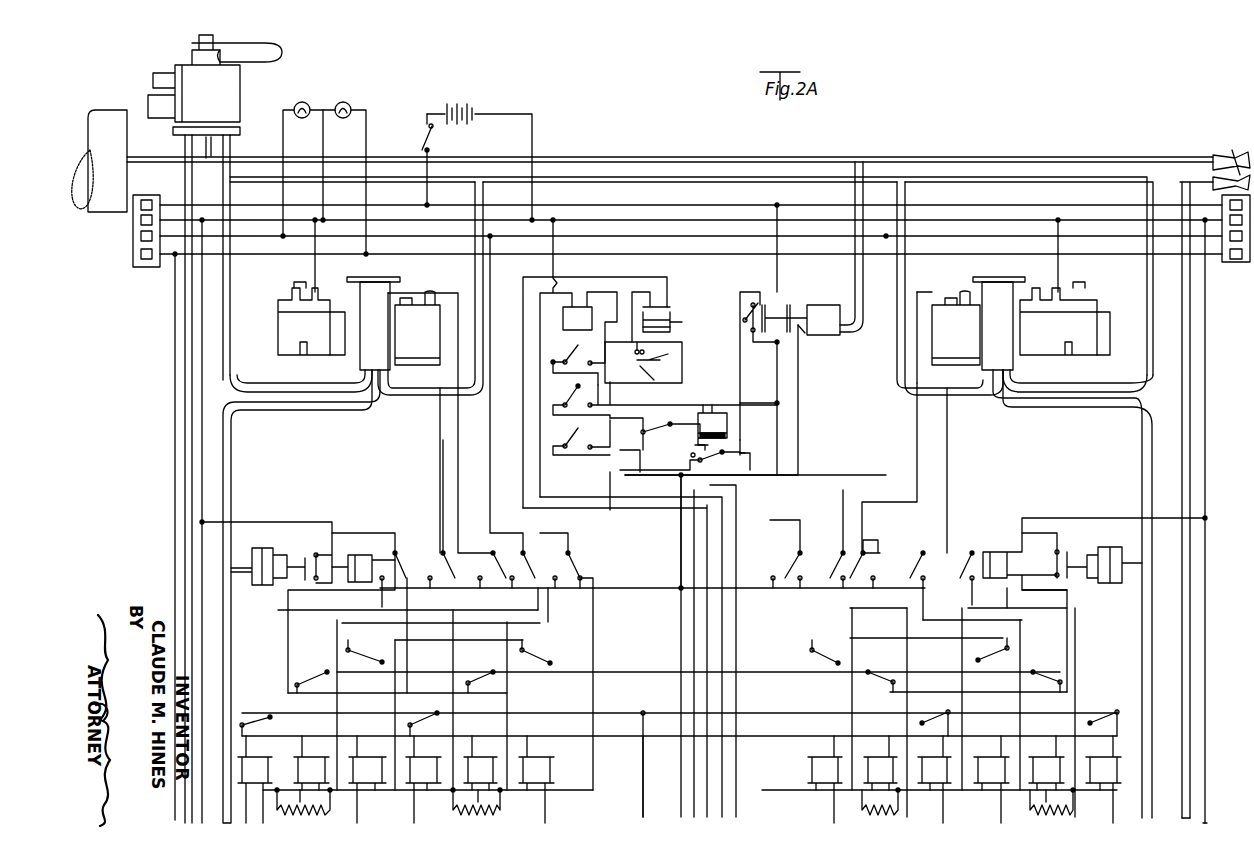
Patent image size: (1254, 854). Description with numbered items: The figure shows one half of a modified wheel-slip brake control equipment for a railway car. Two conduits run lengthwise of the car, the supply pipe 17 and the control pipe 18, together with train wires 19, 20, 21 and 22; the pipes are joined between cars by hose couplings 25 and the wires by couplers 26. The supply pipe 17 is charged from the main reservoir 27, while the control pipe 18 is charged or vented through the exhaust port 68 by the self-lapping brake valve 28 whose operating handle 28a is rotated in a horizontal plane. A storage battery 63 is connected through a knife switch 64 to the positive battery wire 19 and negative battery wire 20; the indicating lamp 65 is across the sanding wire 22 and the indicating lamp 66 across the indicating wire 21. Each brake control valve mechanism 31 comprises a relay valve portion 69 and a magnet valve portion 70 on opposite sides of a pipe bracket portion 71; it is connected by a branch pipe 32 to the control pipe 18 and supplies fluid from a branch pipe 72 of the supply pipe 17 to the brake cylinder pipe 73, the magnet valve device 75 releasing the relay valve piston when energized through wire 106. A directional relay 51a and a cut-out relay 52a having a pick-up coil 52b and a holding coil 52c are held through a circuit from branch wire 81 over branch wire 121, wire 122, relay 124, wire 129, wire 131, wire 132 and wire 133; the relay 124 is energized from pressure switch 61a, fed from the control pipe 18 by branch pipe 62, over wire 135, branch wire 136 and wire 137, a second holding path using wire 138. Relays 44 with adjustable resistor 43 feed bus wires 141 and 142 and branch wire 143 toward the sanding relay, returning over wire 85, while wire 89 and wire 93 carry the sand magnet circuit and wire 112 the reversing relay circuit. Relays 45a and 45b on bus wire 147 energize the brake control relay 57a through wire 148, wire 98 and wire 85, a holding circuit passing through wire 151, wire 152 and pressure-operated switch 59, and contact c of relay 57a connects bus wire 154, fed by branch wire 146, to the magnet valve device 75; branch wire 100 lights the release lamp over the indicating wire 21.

The supply pipe 17 is at (718, 182).
The control pipe 18 is at (742, 157).
The positive battery wire 19 is at (582, 205).
The negative battery wire 20 is at (626, 220).
The indicating wire 21 is at (668, 236).
The sanding wire 22 is at (708, 254).
The hose coupling 25 is at (1232, 152).
The coupler 26 is at (133, 262).
The main reservoir 27 is at (104, 110).
The brake valve 28 is at (172, 65).
The operating handle 28a is at (282, 54).
The brake control valve mechanism 31 is at (278, 302).
The branch pipe 32 is at (230, 266).
The adjustable resistor 43 is at (330, 808).
The relay 44 is at (242, 770).
The relay 45a is at (298, 770).
The relay 45b is at (355, 770).
The directional relay 51a is at (572, 302).
The cut-out relay 52a is at (670, 305).
The pick-up coil 52b is at (670, 317).
The holding coil 52c is at (672, 327).
The brake control relay 57a is at (348, 558).
The pressure-operated switch 59 is at (285, 555).
The pressure switch 61a is at (836, 303).
The branch pipe 62 is at (855, 266).
The storage battery 63 is at (470, 103).
The knife switch 64 is at (422, 140).
The indicating lamp 65 is at (346, 103).
The indicating lamp 66 is at (300, 103).
The exhaust port 68 is at (212, 162).
The relay valve portion 69 is at (408, 360).
The magnet valve portion 70 is at (318, 355).
The pipe bracket portion 71 is at (360, 365).
The branch pipe 72 is at (475, 266).
The brake cylinder pipe 73 is at (231, 437).
The magnet valve device 75 is at (340, 285).
The branch wire 81 is at (777, 266).
The wire 85 is at (202, 337).
The wire 89 is at (175, 297).
The wire 93 is at (1205, 332).
The wire 98 is at (258, 522).
The branch wire 100 is at (490, 485).
The wire 106 is at (458, 435).
The wire 112 is at (610, 471).
The branch wire 121 is at (798, 393).
The wire 122 is at (688, 465).
The relay 124 is at (718, 410).
The wire 129 is at (630, 424).
The wire 131 is at (682, 348).
The wire 132 is at (580, 348).
The wire 133 is at (553, 266).
The wire 135 is at (790, 404).
The branch wire 136 is at (745, 420).
The wire 137 is at (632, 410).
The wire 138 is at (742, 372).
The bus wire 141 is at (643, 745).
The bus wire 142 is at (612, 714).
The branch wire 143 is at (643, 790).
The branch wire 146 is at (681, 545).
The bus wire 147 is at (645, 665).
The wire 148 is at (288, 641).
The wire 151 is at (382, 595).
The wire 152 is at (362, 533).
The bus wire 154 is at (645, 583).